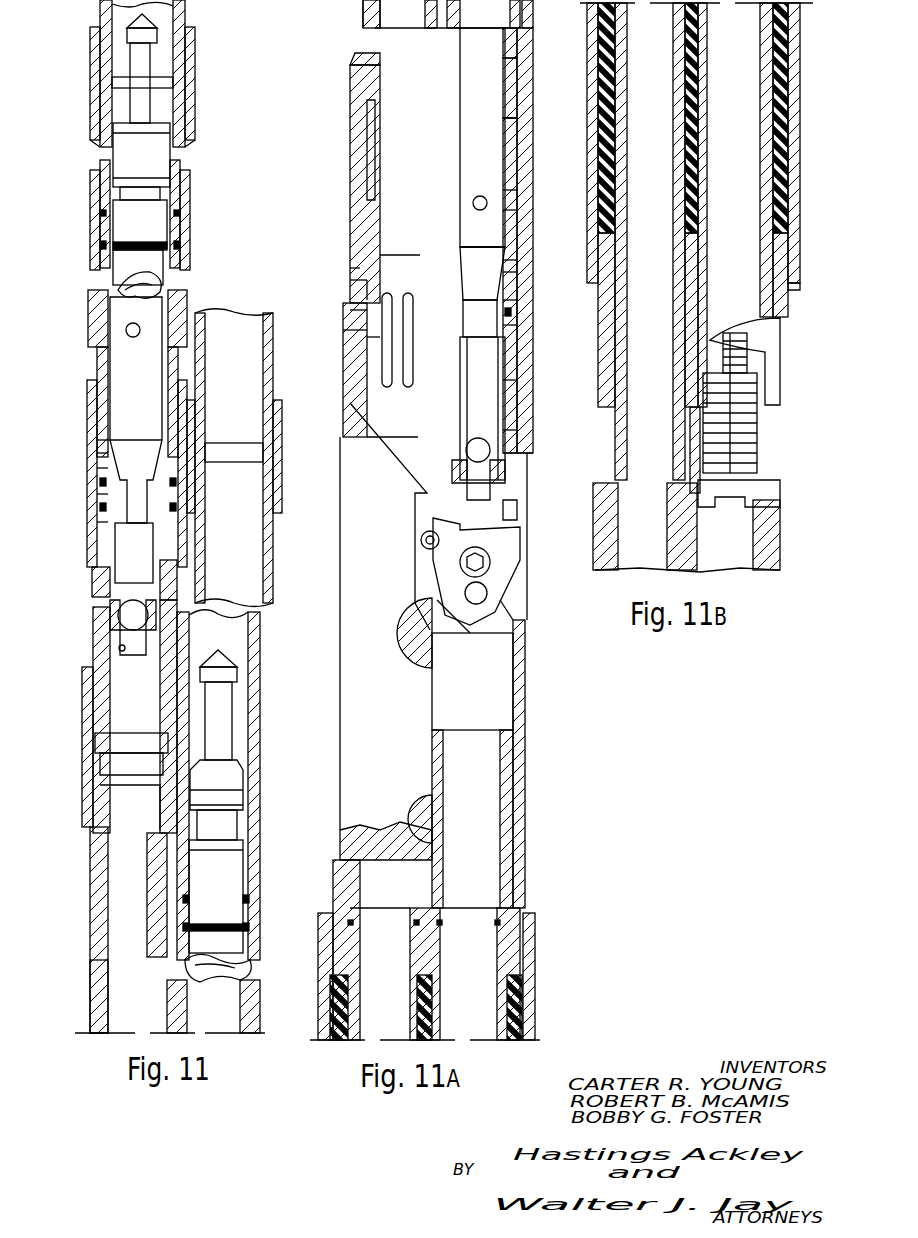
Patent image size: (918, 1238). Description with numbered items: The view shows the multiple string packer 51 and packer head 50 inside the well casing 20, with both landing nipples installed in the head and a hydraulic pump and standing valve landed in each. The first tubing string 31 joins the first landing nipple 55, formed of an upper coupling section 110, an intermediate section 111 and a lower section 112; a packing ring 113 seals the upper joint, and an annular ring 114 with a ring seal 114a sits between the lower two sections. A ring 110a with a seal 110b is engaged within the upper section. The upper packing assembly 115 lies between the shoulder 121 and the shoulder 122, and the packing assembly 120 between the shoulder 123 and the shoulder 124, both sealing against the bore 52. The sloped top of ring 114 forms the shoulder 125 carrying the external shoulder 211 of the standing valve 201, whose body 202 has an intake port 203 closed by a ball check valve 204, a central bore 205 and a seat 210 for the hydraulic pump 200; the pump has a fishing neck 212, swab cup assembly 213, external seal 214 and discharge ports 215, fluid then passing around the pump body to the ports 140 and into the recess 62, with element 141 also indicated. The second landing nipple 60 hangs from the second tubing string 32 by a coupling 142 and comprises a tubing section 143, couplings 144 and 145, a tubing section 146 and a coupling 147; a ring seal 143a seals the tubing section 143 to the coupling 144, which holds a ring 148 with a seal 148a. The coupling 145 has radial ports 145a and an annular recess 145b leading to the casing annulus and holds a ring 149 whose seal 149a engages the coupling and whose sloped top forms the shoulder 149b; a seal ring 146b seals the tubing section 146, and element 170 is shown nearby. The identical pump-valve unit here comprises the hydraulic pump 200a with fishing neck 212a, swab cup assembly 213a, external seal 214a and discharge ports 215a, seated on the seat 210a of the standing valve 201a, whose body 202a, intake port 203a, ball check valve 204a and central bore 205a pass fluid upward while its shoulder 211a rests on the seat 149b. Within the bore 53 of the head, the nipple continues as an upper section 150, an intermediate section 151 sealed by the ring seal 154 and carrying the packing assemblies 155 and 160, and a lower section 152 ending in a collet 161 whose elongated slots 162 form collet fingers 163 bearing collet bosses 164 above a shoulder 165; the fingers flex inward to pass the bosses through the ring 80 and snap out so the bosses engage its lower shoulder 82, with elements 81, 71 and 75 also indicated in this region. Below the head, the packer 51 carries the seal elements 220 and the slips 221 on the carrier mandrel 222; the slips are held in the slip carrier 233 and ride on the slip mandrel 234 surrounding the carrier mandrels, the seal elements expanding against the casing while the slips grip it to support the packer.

In FIG. 11, the tubing string 32 is at (100, 15).
In FIG. 11, the fishing neck 212a is at (135, 50).
In FIG. 11, the coupling 142 is at (90, 70).
In FIG. 11, the tubing section 143 is at (100, 163).
In FIG. 11, the swab cup assembly 213a is at (125, 177).
In FIG. 11, the external seal 214a is at (105, 238).
In FIG. 11, the coupling 144 is at (90, 257).
In FIG. 11, the ring seal 143a is at (180, 214).
In FIG. 11, the ring 148 is at (182, 238).
In FIG. 11, the seal 148a is at (181, 247).
In FIG. 11, the hydraulic pump 200a is at (125, 292).
In FIG. 11, the discharge ports 215a is at (130, 330).
In FIG. 11, the coupling 145 is at (88, 380).
In FIG. 11, the radial ports 145a is at (100, 440).
In FIG. 11, the annular recess 145b is at (97, 453).
In FIG. 11, the shoulder 149b is at (100, 468).
In FIG. 11, the shoulder 211a is at (102, 482).
In FIG. 11, the spring 170 is at (100, 494).
In FIG. 11, the ring 149 is at (100, 508).
In FIG. 11, the seal ring 146b is at (100, 522).
In FIG. 11, the central bore 205a is at (120, 545).
In FIG. 11, the tubing section 146 is at (92, 577).
In FIG. 11, the seat 210a is at (113, 456).
In FIG. 11, the seal 149a is at (190, 478).
In FIG. 11, the ball check valve 204a is at (118, 618).
In FIG. 11, the standing valve 201a is at (115, 633).
In FIG. 11, the standing valve body 202a is at (117, 648).
In FIG. 11, the intake port 203a is at (118, 660).
In FIG. 11, the coupling 147 is at (85, 720).
In FIG. 11, the first tubing string 31 is at (260, 650).
In FIG. 11, the fishing neck 212 is at (225, 710).
In FIG. 11, the swab cup assembly 213 is at (237, 815).
In FIG. 11, the external seal 214 is at (245, 870).
In FIG. 11, the ring 110a is at (248, 907).
In FIG. 11, the seal 110b is at (248, 927).
In FIG. 11, the second landing nipple 60 is at (90, 845).
In FIG. 11, the upper section 150 is at (90, 985).
In FIG. 11, the first landing nipple 55 is at (258, 1010).
In FIG. 11A, the first landing nipple 55 is at (565, 25).
In FIG. 11, the hydraulic pump 200 is at (220, 1022).
In FIG. 11A, the hydraulic pump 200 is at (500, 172).
In FIG. 11A, the ring seal 154 is at (373, 33).
In FIG. 11A, the packing ring 113 is at (522, 38).
In FIG. 11A, the upper coupling section 110 is at (530, 50).
In FIG. 11A, the packing assembly 155 is at (370, 105).
In FIG. 11A, the intermediate section 151 is at (365, 130).
In FIG. 11A, the shoulder 121 is at (525, 97).
In FIG. 11A, the upper packing assembly 115 is at (527, 125).
In FIG. 11A, the packing assembly 160 is at (365, 165).
In FIG. 11A, the shoulder 122 is at (525, 155).
In FIG. 11A, the shoulder 141 is at (515, 195).
In FIG. 11A, the intermediate section 111 is at (515, 212).
In FIG. 11A, the discharge ports 215 is at (487, 207).
In FIG. 11A, the lower section 152 is at (362, 257).
In FIG. 11A, the seal 81 is at (358, 268).
In FIG. 11A, the shoulder 165 is at (365, 278).
In FIG. 11A, the ring 80 is at (365, 297).
In FIG. 11A, the collet fingers 163 is at (360, 310).
In FIG. 11A, the lower shoulder 82 is at (367, 330).
In FIG. 11A, the collet bosses 164 is at (375, 335).
In FIG. 11A, the elongated slots 162 is at (385, 350).
In FIG. 11A, the collet 161 is at (350, 400).
In FIG. 11A, the packer head 50 is at (566, 248).
In FIG. 11A, the recess 62 is at (520, 260).
In FIG. 11A, the ports 140 is at (520, 272).
In FIG. 11A, the seat 210 is at (495, 287).
In FIG. 11A, the shoulder 125 is at (515, 300).
In FIG. 11A, the external shoulder 211 is at (515, 312).
In FIG. 11A, the ring seal 114a is at (515, 325).
In FIG. 11A, the annular ring 114 is at (518, 337).
In FIG. 11A, the central bore 205 is at (500, 357).
In FIG. 11A, the shoulder 123 is at (520, 392).
In FIG. 11A, the bore 53 is at (360, 445).
In FIG. 11A, the packing assembly 120 is at (522, 433).
In FIG. 11A, the ball check valve 204 is at (489, 448).
In FIG. 11A, the shoulder 124 is at (517, 453).
In FIG. 11A, the standing valve 201 is at (500, 465).
In FIG. 11A, the standing valve body 202 is at (490, 478).
In FIG. 11A, the intake port 203 is at (485, 485).
In FIG. 11A, the lower section 112 is at (512, 520).
In FIG. 11A, the pivot bolt 71 is at (492, 563).
In FIG. 11A, the pin 75 is at (489, 595).
In FIG. 11A, the bore 52 is at (500, 770).
In FIG. 11A, the well casing 20 is at (535, 930).
In FIG. 11B, the well casing 20 is at (800, 45).
In FIG. 11A, the multiple string packer 51 is at (525, 980).
In FIG. 11B, the multiple string packer 51 is at (783, 297).
In FIG. 11A, the seal elements 220 is at (528, 1020).
In FIG. 11B, the seal elements 220 is at (785, 62).
In FIG. 11B, the slip carrier 233 is at (680, 33).
In FIG. 11B, the carrier mandrel 222 is at (770, 45).
In FIG. 11B, the slip mandrel 234 is at (775, 333).
In FIG. 11B, the slips 221 is at (752, 423).